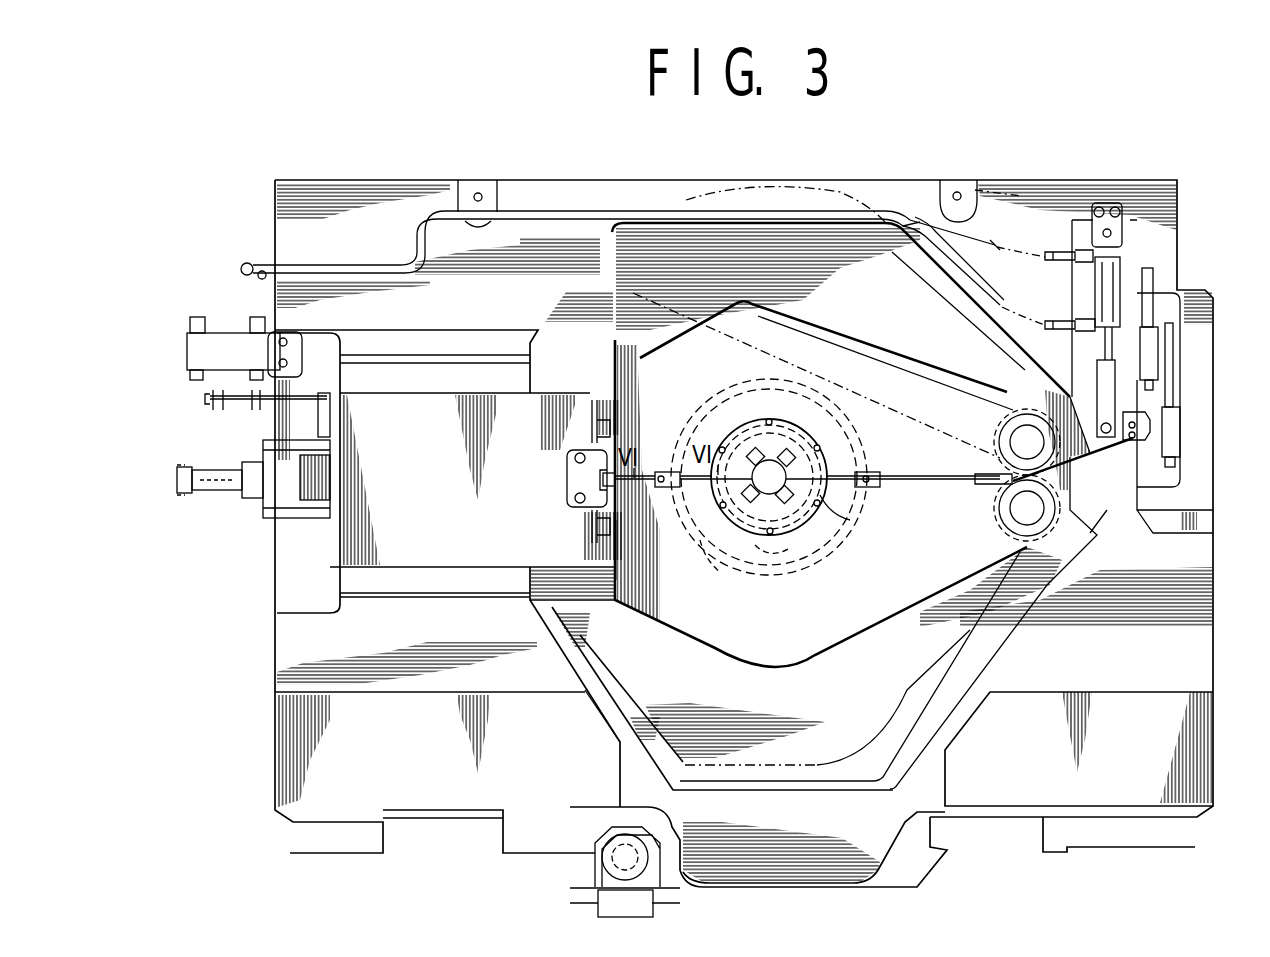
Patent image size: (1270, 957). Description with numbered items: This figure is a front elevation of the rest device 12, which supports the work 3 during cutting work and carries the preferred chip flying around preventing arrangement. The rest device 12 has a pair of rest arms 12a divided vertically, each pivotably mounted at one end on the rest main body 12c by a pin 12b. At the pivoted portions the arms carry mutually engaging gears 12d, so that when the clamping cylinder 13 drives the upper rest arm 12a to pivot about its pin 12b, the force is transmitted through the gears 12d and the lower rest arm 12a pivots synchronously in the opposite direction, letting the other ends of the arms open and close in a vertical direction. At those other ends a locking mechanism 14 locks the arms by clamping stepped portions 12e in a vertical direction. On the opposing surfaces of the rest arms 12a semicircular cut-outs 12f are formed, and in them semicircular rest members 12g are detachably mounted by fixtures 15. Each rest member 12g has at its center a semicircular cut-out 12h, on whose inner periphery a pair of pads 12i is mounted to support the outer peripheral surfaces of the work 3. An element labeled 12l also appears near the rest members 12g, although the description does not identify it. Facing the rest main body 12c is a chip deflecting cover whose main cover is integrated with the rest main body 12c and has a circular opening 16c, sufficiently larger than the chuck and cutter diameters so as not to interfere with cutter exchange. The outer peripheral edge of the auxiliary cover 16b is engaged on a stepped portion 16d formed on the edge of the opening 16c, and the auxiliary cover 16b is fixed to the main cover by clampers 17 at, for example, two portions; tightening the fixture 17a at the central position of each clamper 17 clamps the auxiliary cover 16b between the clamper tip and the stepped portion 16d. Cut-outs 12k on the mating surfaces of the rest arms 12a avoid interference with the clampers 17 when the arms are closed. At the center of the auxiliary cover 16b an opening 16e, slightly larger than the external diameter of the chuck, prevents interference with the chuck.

The rest device 12 is at (838, 180).
The rest arms 12a is at (851, 365).
The pins 12b is at (1028, 508).
The rest main body 12c is at (1192, 650).
The gears 12d is at (988, 443).
The stepped portions 12e is at (593, 440).
The semicircular cut-outs 12f is at (737, 393).
The rest members 12g is at (822, 450).
The semicircular cut-outs 12h is at (752, 415).
The pads 12i is at (817, 498).
The cut-outs 12k is at (617, 525).
The jaw member 12l is at (787, 405).
The clamping cylinder 13 is at (1112, 280).
The locking mechanism 14 is at (353, 523).
The fixtures 15 is at (718, 447).
The auxiliary cover 16b is at (877, 568).
The circular opening 16c is at (742, 588).
The stepped portion 16d is at (706, 575).
The opening 16e is at (827, 562).
The clampers 17 is at (655, 472).
The fixture 17a is at (703, 553).
The work 3 is at (770, 512).